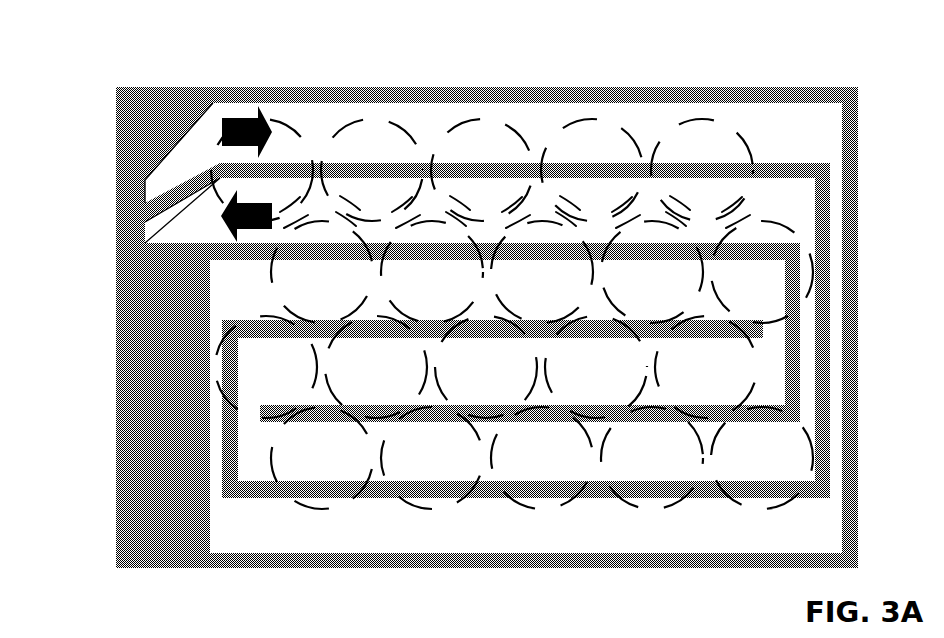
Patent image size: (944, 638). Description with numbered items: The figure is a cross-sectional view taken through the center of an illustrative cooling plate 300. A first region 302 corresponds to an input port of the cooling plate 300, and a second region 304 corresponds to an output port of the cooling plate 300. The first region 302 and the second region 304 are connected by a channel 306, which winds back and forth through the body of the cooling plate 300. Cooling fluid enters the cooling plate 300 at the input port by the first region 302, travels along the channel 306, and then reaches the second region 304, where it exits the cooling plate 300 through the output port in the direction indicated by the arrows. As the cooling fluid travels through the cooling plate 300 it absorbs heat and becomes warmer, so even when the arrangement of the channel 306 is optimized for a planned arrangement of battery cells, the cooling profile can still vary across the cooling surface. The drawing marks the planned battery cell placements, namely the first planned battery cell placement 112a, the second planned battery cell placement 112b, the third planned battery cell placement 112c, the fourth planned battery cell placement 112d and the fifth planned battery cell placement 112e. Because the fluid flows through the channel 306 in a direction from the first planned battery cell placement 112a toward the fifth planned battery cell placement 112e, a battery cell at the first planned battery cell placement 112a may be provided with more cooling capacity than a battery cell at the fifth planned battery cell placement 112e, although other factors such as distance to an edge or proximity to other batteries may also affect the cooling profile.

The cooling plate 300 is at (441, 324).
The first region 302 is at (177, 180).
The second region 304 is at (177, 232).
The channel 306 is at (316, 124).
The first planned battery cell placement 112a is at (325, 460).
The second planned battery cell placement 112b is at (435, 460).
The third planned battery cell placement 112c is at (545, 460).
The fourth planned battery cell placement 112d is at (655, 460).
The fifth planned battery cell placement 112e is at (765, 460).